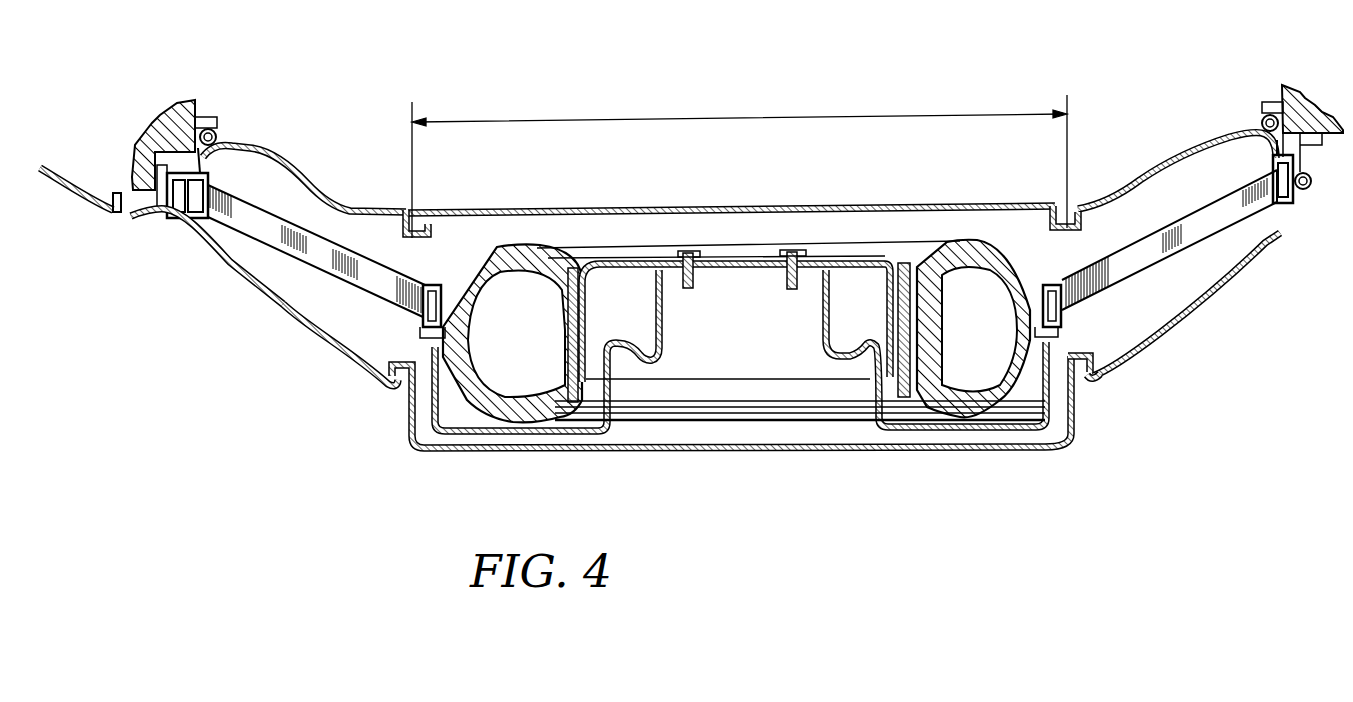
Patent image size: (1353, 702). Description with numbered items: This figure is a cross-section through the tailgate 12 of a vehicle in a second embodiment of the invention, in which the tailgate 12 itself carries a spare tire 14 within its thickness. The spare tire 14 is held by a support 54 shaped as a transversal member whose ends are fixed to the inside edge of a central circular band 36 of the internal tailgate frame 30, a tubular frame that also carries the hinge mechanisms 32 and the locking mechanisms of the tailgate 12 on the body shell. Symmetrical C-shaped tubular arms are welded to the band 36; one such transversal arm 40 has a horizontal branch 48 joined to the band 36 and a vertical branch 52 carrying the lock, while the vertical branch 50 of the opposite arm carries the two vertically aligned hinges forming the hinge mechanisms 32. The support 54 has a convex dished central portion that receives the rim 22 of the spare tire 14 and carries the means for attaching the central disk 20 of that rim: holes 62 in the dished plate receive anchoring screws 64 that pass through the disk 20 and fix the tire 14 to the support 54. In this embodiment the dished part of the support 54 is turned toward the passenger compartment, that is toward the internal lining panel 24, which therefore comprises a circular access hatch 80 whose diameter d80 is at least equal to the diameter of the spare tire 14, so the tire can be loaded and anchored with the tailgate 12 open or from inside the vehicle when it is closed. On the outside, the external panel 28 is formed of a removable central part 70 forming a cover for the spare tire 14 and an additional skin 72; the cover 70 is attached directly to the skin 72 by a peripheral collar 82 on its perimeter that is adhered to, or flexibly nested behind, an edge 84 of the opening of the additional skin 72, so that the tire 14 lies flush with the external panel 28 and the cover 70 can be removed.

The tailgate 12 is at (377, 431).
The spare tire 14 is at (518, 246).
The central disk 20 is at (620, 259).
The rim 22 is at (562, 335).
The internal lining panel 24 is at (334, 184).
The external panel 28 is at (294, 347).
The internal tailgate frame 30 is at (247, 178).
The hinge mechanisms 32 is at (1311, 190).
The central circular band 36 is at (434, 281).
The transversal arm 40 is at (281, 238).
The horizontal branch 48 is at (332, 265).
The vertical branch 50 is at (1284, 208).
The vertical branch 52 is at (196, 220).
The support 54 is at (652, 358).
The holes 62 is at (714, 273).
The anchoring screws 64 is at (688, 252).
The removable central part 70 is at (718, 453).
The additional skin 72 is at (268, 314).
The circular access hatch 80 is at (814, 204).
The peripheral collar 82 is at (1086, 350).
The edge 84 is at (1084, 387).